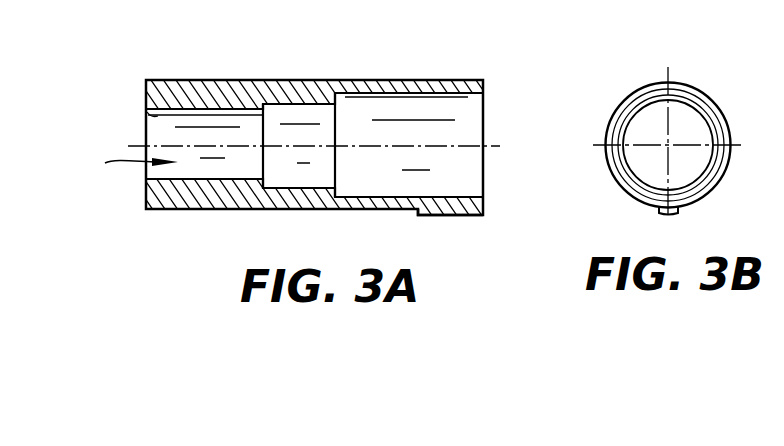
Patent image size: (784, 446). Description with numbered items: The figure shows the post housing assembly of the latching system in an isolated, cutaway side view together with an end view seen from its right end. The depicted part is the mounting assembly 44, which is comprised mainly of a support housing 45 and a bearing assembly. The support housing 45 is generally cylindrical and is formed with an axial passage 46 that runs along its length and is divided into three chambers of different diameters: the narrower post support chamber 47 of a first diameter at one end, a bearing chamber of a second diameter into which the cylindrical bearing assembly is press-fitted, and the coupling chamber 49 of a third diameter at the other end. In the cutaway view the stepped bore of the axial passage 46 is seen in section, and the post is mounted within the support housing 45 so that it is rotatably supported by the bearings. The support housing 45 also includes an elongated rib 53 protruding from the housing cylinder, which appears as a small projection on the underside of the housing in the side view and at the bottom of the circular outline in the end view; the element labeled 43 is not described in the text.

In FIG. 3A, the ring / shoulder insert 43 is at (286, 186).
In FIG. 3A, the mounting assembly 44 is at (228, 81).
In FIG. 3A, the support housing 45 is at (302, 92).
In FIG. 3B, the support housing 45 is at (708, 89).
In FIG. 3A, the axial passage 46 is at (126, 168).
In FIG. 3A, the post support chamber 47 is at (146, 117).
In FIG. 3A, the coupling chamber 49 is at (384, 100).
In FIG. 3A, the elongated rib 53 is at (433, 216).
In FIG. 3B, the elongated rib 53 is at (681, 212).